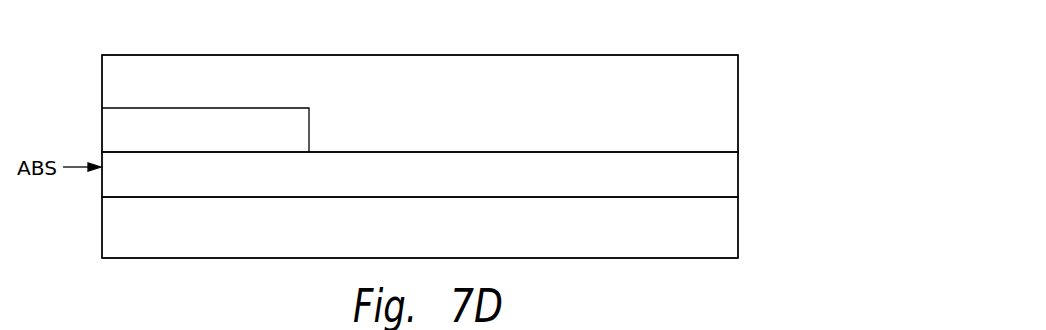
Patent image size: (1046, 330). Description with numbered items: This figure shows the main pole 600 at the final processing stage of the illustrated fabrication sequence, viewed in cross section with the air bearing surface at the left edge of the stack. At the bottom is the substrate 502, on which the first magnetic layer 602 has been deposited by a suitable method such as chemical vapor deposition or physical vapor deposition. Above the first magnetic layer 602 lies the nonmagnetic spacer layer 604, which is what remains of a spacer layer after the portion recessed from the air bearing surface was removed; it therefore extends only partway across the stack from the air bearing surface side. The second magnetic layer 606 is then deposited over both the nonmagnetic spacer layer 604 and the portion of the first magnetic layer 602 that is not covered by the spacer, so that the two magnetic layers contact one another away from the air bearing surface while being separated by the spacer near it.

The main pole 600 is at (650, 32).
The second magnetic layer 606 is at (427, 112).
The nonmagnetic spacer layer 604 is at (234, 140).
The first magnetic layer 602 is at (427, 185).
The substrate 502 is at (427, 235).